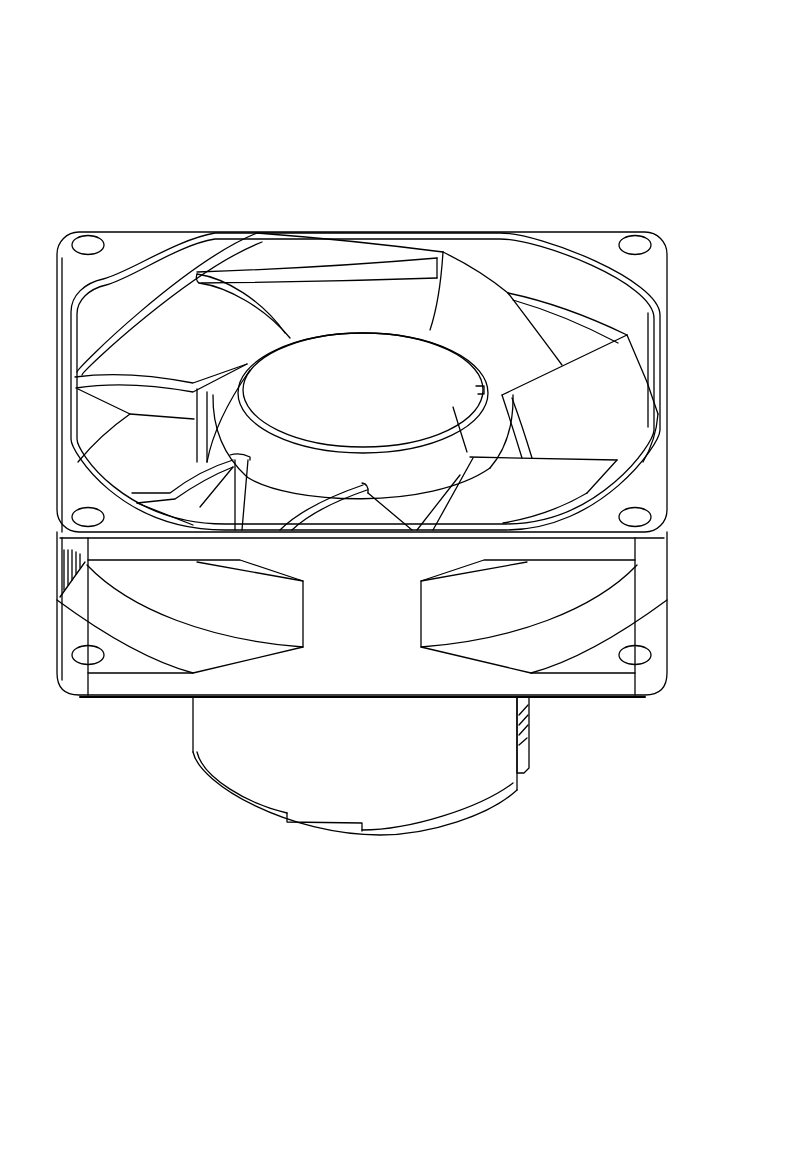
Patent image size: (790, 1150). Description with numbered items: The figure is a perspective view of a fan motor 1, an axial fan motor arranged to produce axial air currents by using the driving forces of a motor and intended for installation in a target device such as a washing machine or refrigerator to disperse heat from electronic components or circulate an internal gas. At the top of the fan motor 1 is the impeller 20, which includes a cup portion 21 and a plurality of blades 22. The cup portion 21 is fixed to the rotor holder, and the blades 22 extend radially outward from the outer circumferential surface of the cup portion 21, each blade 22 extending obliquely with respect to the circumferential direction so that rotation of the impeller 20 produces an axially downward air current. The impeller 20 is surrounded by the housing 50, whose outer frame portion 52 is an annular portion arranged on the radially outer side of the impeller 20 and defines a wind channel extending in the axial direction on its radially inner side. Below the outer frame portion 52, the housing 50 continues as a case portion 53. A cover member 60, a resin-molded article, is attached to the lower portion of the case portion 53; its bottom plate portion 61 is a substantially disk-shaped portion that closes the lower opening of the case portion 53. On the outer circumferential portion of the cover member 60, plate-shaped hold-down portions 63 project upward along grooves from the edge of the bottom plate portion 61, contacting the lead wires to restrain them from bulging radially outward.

The fan motor 1 is at (195, 115).
The impeller 20 is at (508, 166).
The cup portion 21 is at (390, 367).
The blades 22 is at (483, 300).
The housing 50 is at (100, 710).
The outer frame portion 52 is at (592, 245).
The case portion 53 is at (340, 782).
The cover member 60 is at (505, 805).
The bottom plate portion 61 is at (458, 812).
The hold-down portions 63 is at (527, 730).